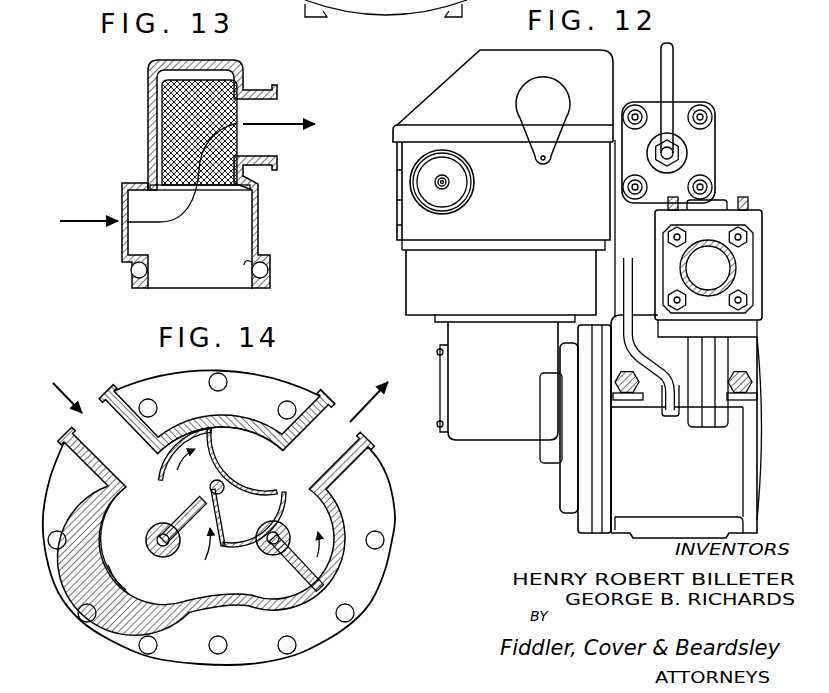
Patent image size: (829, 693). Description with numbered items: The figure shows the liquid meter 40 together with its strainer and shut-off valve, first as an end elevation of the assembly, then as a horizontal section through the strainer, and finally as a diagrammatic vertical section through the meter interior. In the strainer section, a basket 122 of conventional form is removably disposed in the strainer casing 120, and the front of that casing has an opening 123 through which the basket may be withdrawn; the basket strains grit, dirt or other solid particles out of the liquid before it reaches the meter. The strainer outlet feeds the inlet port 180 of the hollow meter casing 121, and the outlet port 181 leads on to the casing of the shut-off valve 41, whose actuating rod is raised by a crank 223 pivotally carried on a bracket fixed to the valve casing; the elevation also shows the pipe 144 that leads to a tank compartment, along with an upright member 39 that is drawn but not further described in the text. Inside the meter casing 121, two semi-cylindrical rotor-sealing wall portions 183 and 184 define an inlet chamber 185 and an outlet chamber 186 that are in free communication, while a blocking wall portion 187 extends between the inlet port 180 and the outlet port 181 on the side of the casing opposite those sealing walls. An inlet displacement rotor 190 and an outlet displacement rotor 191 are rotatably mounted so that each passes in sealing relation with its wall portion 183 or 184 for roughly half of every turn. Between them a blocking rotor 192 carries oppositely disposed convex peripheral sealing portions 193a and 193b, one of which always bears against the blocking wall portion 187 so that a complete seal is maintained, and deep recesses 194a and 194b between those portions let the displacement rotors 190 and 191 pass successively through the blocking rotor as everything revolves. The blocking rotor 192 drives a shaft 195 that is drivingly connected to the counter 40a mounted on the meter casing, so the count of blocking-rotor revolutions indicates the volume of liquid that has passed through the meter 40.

In FIG. 13, the strainer casing 120 is at (258, 215).
In FIG. 13, the basket 122 is at (172, 101).
In FIG. 13, the opening 123 is at (250, 262).
In FIG. 14, the casing 121 is at (345, 563).
In FIG. 14, the inlet port 180 is at (93, 420).
In FIG. 14, the outlet port 181 is at (352, 418).
In FIG. 14, the inlet chamber 185 is at (113, 540).
In FIG. 14, the outlet chamber 186 is at (323, 570).
In FIG. 14, the blocking wall portion 187 is at (248, 428).
In FIG. 14, the inlet displacement rotor 190 is at (170, 526).
In FIG. 14, the outlet displacement rotor 191 is at (293, 545).
In FIG. 14, the blocking rotor 192 is at (285, 488).
In FIG. 14, the peripheral sealing wall portion 193a is at (165, 478).
In FIG. 14, the peripheral sealing wall portion 193b is at (233, 545).
In FIG. 14, the recess 194a is at (182, 500).
In FIG. 14, the recess 194b is at (245, 487).
In FIG. 14, the shaft 195 is at (223, 484).
In FIG. 14, the rotor-sealing wall portion 183 is at (110, 568).
In FIG. 14, the rotor-sealing wall portion 184 is at (279, 606).
In FIG. 12, the meter 40 is at (398, 0).
In FIG. 12, the counter 40a is at (421, 105).
In FIG. 12, the rod 39 is at (685, 100).
In FIG. 12, the pipe 144 is at (672, 125).
In FIG. 12, the shut-off valve 41 is at (751, 223).
In FIG. 12, the crank 223 is at (628, 283).